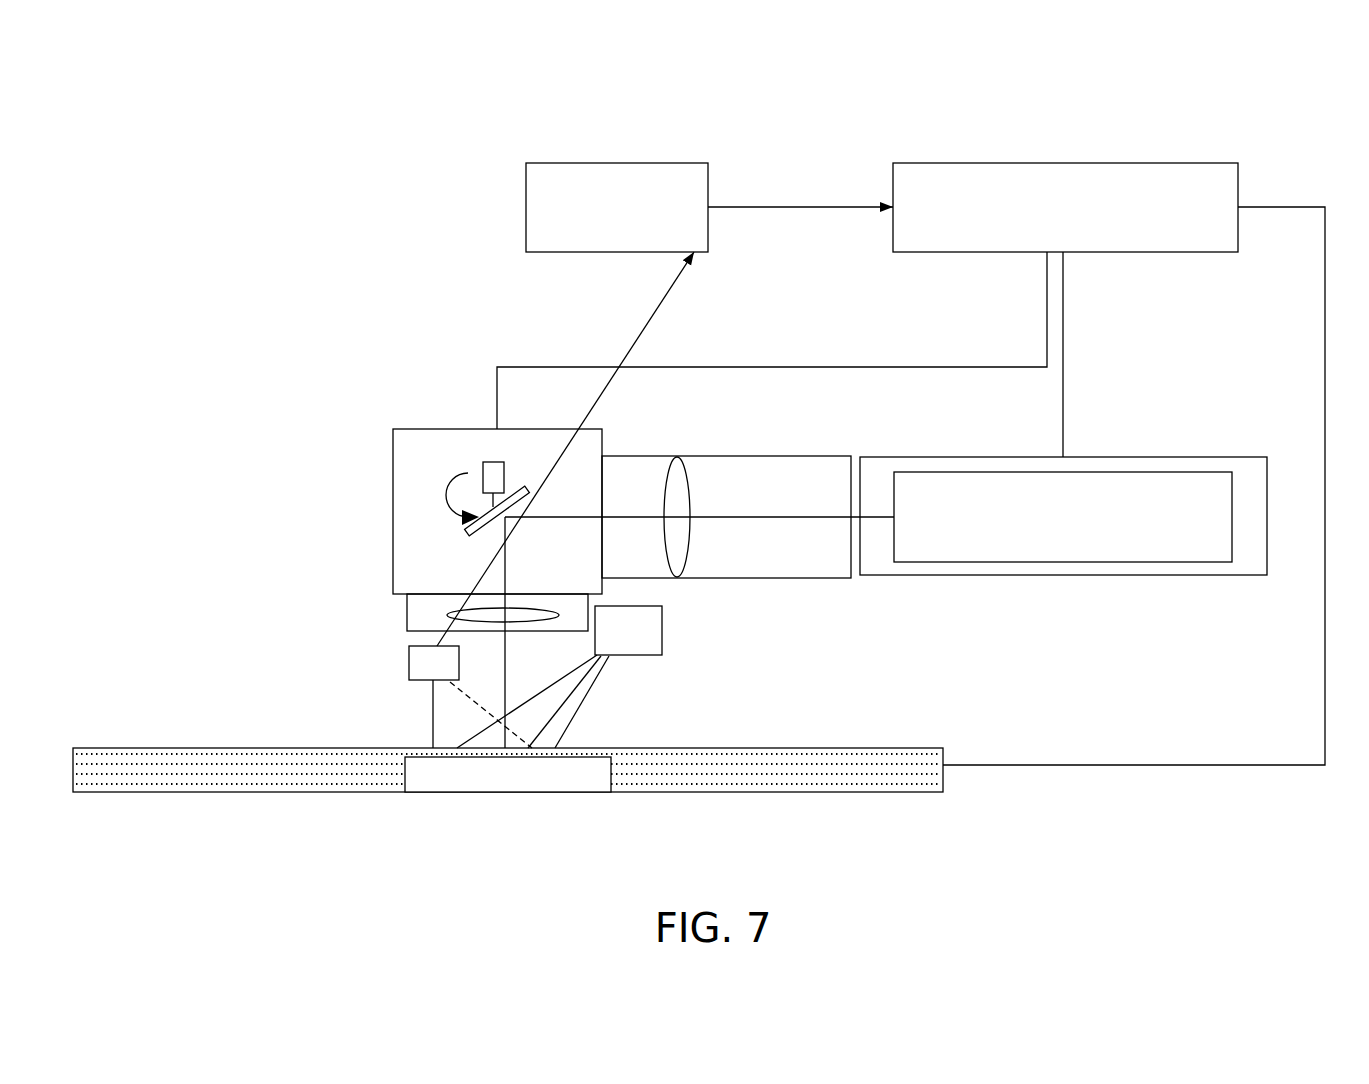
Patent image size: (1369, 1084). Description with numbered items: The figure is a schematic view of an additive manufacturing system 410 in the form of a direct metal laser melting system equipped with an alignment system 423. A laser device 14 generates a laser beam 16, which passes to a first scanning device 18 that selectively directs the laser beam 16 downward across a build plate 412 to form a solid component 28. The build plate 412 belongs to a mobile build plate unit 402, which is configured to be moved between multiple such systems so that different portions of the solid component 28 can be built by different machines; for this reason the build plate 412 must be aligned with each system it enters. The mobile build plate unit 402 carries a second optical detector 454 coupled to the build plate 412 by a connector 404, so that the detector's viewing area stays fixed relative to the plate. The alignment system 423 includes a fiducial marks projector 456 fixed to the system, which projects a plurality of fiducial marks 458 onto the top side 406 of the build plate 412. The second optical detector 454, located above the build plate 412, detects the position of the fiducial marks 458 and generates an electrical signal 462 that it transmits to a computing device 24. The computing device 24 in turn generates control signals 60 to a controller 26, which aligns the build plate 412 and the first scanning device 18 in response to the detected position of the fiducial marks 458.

The additive manufacturing system 410 is at (1150, 112).
The computing device 24 is at (616, 163).
The controller 26 is at (1065, 163).
The control signals 60 is at (800, 207).
The electrical signal 462 is at (660, 310).
The first scanning device 18 is at (435, 429).
The laser beam 16 is at (767, 517).
The laser device 14 is at (1143, 562).
The alignment system 423 is at (900, 610).
The second optical detector 454 is at (409, 661).
The connector 404 is at (433, 712).
The fiducial marks projector 456 is at (662, 640).
The fiducial marks 458 is at (545, 684).
The top side 406 is at (166, 748).
The build plate 412 is at (816, 748).
The mobile build plate unit 402 is at (347, 802).
The solid component 28 is at (527, 748).